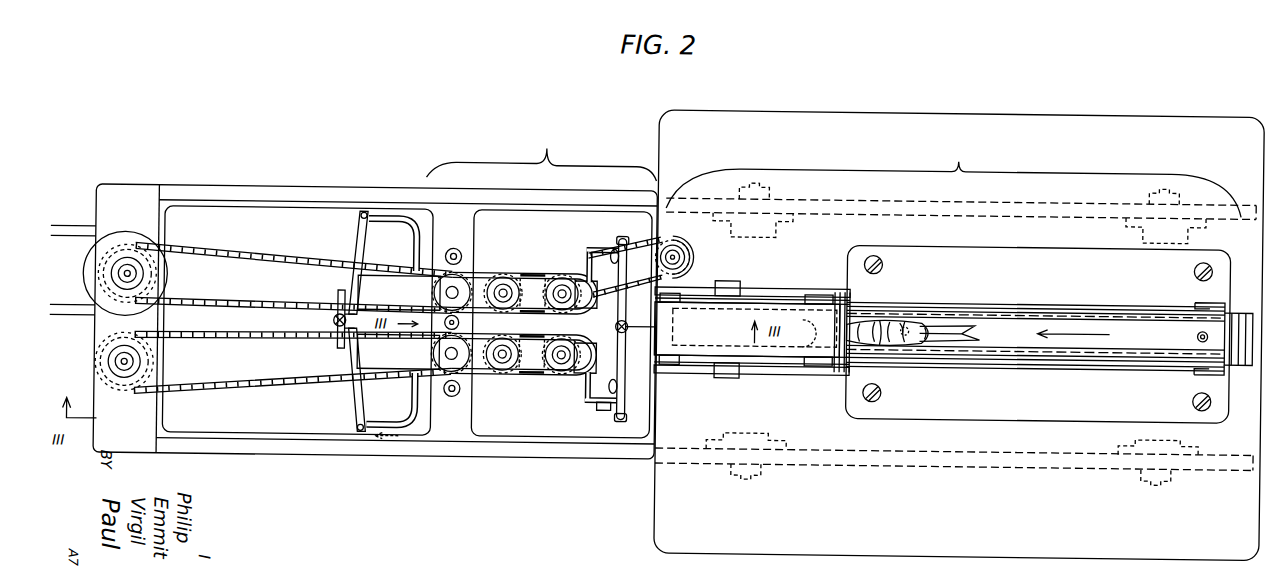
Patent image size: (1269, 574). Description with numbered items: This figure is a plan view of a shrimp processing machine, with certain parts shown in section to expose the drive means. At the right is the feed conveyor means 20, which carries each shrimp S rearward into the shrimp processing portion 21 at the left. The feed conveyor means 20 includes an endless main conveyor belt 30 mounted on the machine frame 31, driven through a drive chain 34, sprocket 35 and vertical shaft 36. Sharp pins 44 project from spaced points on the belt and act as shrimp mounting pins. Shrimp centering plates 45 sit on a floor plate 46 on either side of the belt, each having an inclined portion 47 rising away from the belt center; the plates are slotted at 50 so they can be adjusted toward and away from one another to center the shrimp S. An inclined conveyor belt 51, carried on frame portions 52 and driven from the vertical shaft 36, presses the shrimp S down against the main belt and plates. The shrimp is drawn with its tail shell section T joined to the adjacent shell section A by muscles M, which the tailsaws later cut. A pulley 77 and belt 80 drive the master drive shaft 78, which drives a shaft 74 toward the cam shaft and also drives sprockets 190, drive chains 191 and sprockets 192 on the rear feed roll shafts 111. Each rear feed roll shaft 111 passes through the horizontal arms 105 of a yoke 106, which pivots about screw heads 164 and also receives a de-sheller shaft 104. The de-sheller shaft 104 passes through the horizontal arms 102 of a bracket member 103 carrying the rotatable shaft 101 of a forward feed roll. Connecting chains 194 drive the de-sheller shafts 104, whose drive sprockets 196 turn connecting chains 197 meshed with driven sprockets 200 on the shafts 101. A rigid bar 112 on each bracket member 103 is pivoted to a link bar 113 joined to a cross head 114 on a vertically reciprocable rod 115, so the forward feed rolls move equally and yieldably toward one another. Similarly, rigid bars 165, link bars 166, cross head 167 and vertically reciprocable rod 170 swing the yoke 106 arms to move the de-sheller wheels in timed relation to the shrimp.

The feed conveyor means 20 is at (959, 335).
The shrimp processing portion 21 is at (542, 154).
The endless main conveyor belt 30 is at (1051, 333).
The machine frame 31 is at (270, 191).
The drive chain 34 is at (628, 248).
The sprocket 35 is at (666, 242).
The vertical shaft 36 is at (680, 253).
The sharp pins 44 is at (1197, 330).
The shrimp centering plates 45 is at (1025, 300).
The floor plate 46 is at (953, 471).
The inclined portion 47 is at (1080, 309).
The slot 50 is at (874, 253).
The inclined conveyor belt 51 is at (778, 302).
The frame portions 52 is at (763, 287).
The shaft 74 is at (152, 360).
The pulley 77 is at (84, 291).
The master drive shaft 78 is at (133, 281).
The belt 80 is at (83, 233).
The rotatable shaft 101 is at (586, 248).
The horizontal arms 102 is at (586, 309).
The bracket member 103 is at (619, 259).
The de-sheller shaft 104 is at (505, 288).
The horizontal arms 105 is at (478, 321).
The yoke 106 is at (406, 279).
The rear feed roll shaft 111 is at (446, 258).
The rigid bar 112 is at (605, 412).
The link bar 113 is at (620, 240).
The cross head 114 is at (624, 334).
The vertically reciprocable rod 115 is at (650, 327).
The screw heads 164 is at (455, 322).
The rigid bars 165 is at (390, 218).
The link bars 166 is at (357, 247).
The cross head 167 is at (337, 348).
The vertically reciprocable rod 170 is at (325, 318).
The sprockets 190 is at (180, 252).
The drive chains 191 is at (293, 319).
The sprockets 192 is at (450, 294).
The connecting chains 194 is at (490, 277).
The drive sprockets 196 is at (533, 280).
The connecting chain 197 is at (540, 277).
The driven sprocket 200 is at (562, 290).
The shrimp S is at (872, 320).
The muscles M is at (913, 322).
The shell section A is at (881, 340).
The shell section T is at (920, 338).